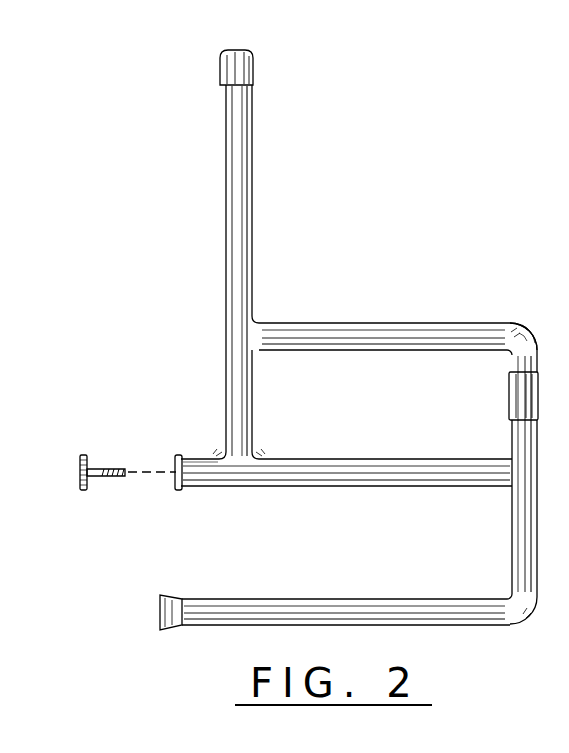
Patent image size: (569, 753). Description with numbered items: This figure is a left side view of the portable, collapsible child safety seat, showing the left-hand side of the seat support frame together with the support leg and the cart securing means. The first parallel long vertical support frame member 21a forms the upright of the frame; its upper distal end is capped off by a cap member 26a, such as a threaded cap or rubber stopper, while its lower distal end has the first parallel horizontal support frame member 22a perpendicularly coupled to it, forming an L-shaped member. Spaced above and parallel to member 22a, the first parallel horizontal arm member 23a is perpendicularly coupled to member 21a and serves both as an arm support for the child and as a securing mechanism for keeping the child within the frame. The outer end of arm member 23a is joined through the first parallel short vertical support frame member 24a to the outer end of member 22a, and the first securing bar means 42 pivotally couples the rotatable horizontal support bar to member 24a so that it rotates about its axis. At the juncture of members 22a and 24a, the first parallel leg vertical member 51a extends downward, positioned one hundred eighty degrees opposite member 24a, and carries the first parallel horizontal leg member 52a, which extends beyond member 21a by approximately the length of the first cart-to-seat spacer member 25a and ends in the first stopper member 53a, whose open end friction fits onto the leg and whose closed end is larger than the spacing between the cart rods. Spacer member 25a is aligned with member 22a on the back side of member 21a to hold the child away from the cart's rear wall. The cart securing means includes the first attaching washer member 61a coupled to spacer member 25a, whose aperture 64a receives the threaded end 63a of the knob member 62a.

The first parallel long vertical support frame member 21a is at (252, 157).
The cap member 26a is at (253, 64).
The first parallel horizontal arm member 23a is at (346, 323).
The first parallel short vertical support frame member 24a is at (538, 364).
The first securing bar means 42 is at (510, 409).
The first parallel leg vertical member 51a is at (512, 541).
The first parallel horizontal leg member 52a is at (318, 598).
The first stopper member 53a is at (160, 607).
The first parallel horizontal support frame member 22a is at (358, 458).
The first cart-to-seat spacer member 25a is at (196, 459).
The first attaching washer member 61a is at (182, 489).
The aperture 64a is at (168, 478).
The knob member 62a is at (78, 465).
The threaded end 63a is at (113, 468).